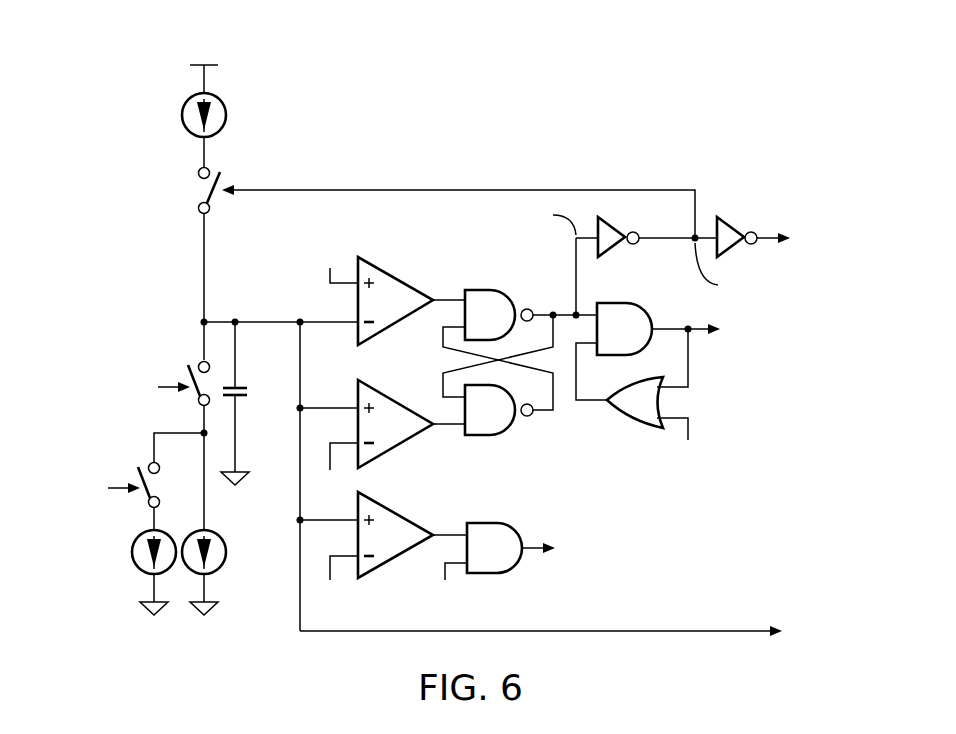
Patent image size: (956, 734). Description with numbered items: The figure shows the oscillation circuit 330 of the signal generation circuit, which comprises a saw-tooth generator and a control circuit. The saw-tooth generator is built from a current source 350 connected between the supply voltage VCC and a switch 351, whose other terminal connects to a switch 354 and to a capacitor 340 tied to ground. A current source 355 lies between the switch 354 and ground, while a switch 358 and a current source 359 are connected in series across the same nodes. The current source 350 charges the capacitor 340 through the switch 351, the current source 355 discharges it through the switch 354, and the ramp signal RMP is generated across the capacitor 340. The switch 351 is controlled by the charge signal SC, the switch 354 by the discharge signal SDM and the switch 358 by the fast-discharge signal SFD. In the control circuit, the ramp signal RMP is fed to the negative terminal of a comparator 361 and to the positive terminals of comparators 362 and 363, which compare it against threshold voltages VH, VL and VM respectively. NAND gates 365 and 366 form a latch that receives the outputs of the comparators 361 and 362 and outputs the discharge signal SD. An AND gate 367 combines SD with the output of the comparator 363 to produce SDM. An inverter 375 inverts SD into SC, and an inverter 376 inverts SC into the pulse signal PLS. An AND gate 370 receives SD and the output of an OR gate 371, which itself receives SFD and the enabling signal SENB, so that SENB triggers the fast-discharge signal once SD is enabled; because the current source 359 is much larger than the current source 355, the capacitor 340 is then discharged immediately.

The oscillation circuit 330 is at (783, 76).
The capacitor 340 is at (247, 392).
The current source 350 is at (228, 118).
The switch 351 is at (192, 192).
The switch 354 is at (196, 357).
The current source 355 is at (226, 552).
The switch 358 is at (146, 458).
The current source 359 is at (130, 553).
The comparator 361 is at (388, 268).
The comparator 362 is at (400, 447).
The comparator 363 is at (408, 513).
The NAND gate 365 is at (485, 288).
The NAND gate 366 is at (483, 440).
The AND gate 367 is at (490, 580).
The AND gate 370 is at (620, 303).
The OR gate 371 is at (632, 432).
The inverter 375 is at (612, 220).
The inverter 376 is at (733, 220).